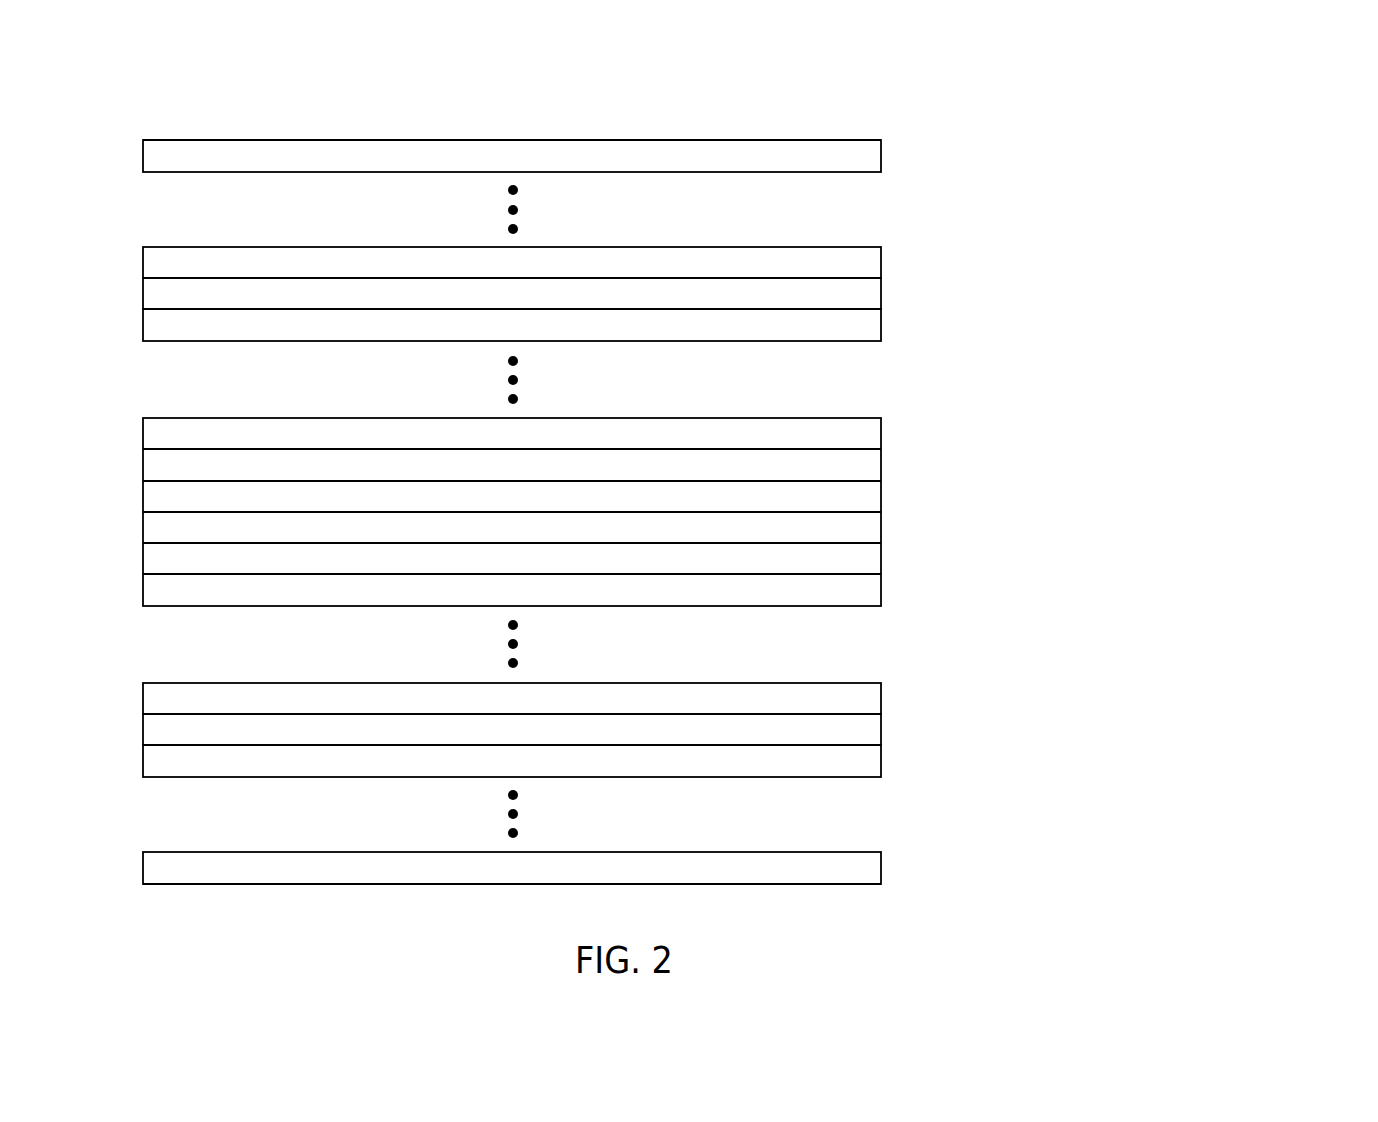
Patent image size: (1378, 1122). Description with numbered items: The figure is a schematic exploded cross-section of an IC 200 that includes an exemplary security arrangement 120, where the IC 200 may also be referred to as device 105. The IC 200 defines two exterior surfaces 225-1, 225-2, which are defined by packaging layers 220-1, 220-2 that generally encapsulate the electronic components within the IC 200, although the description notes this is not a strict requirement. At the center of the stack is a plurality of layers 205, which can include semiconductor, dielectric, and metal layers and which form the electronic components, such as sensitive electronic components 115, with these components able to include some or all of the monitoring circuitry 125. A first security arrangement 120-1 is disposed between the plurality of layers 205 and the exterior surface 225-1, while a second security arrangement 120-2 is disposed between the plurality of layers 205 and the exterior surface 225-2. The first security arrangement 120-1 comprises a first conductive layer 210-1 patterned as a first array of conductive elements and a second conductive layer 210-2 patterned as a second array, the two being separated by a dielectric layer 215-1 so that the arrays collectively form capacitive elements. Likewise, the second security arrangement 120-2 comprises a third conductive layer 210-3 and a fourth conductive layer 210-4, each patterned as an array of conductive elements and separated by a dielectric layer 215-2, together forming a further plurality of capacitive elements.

The IC 200 is at (1200, 92).
The electronic device 105 is at (1328, 65).
The packaging layer 220-1 is at (881, 155).
The packaging layer 220-2 is at (881, 868).
The exterior surface 225-1 is at (726, 130).
The exterior surface 225-2 is at (726, 897).
The first security arrangement 120-1 is at (670, 277).
The second security arrangement 120-2 is at (671, 710).
The first conductive layer 210-1 is at (881, 263).
The second conductive layer 210-2 is at (881, 325).
The third conductive layer 210-3 is at (881, 697).
The fourth conductive layer 210-4 is at (881, 759).
The dielectric layer 215-1 is at (881, 294).
The dielectric layer 215-2 is at (881, 728).
The plurality of layers 205 is at (899, 418).
The sensitive electronic components 115 is at (1080, 543).
The security arrangement 120 is at (1270, 543).
The monitoring circuitry 125 is at (1078, 573).